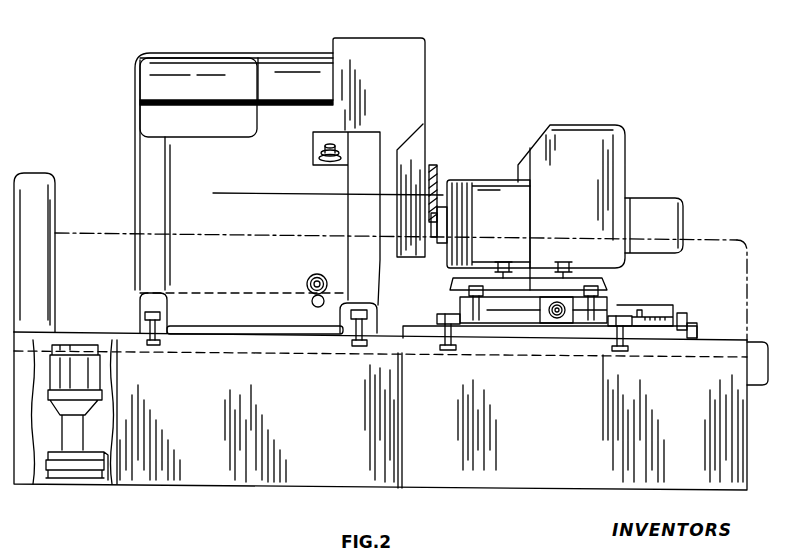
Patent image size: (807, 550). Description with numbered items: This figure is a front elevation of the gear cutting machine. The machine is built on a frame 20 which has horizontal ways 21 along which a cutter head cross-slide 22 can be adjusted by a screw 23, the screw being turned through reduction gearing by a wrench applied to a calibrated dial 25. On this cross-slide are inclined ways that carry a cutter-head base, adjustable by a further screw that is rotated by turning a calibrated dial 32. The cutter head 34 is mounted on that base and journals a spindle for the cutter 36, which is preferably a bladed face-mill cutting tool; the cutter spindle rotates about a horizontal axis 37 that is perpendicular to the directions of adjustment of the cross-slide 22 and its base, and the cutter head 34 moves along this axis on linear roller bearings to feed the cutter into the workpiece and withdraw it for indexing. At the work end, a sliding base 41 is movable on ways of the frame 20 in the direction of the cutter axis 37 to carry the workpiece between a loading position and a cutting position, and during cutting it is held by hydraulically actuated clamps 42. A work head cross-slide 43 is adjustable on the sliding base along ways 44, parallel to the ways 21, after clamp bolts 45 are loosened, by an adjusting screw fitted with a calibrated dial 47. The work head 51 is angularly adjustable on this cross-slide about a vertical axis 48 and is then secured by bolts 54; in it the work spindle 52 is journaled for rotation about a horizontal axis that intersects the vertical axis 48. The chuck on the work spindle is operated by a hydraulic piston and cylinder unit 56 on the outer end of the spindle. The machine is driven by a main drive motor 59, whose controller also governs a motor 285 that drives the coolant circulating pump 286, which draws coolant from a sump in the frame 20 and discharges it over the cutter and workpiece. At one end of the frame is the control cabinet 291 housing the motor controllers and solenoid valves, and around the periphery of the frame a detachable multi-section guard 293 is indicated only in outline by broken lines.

The frame 20 is at (556, 444).
The horizontal ways 21 is at (163, 325).
The cutter head cross-slide 22 is at (243, 263).
The screw 23 is at (312, 302).
The calibrated dial 25 is at (309, 275).
The calibrated dial 32 is at (314, 150).
The cutter head 34 is at (368, 92).
The cutter 36 is at (434, 166).
The axis of rotation of the cutter spindle 37 is at (267, 193).
The sliding base 41 is at (690, 330).
The hydraulically actuated clamps 42 is at (452, 314).
The work head cross-slide 43 is at (518, 305).
The ways 44 is at (490, 322).
The clamp bolts 45 is at (470, 287).
The calibrated dial 47 is at (547, 320).
The vertical axis 48 is at (533, 210).
The work head 51 is at (567, 221).
The work spindle 52 is at (447, 200).
The bolts 54 is at (503, 265).
The hydraulic piston and cylinder unit 56 is at (648, 213).
The main drive motor 59 is at (191, 72).
The motor 285 is at (92, 378).
The coolant circulating pump 286 is at (82, 465).
The control cabinet 291 is at (38, 192).
The multi-section guard 293 is at (92, 235).